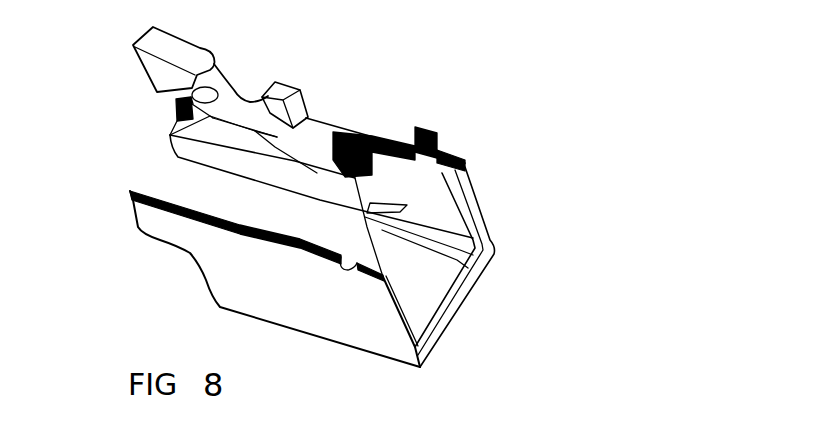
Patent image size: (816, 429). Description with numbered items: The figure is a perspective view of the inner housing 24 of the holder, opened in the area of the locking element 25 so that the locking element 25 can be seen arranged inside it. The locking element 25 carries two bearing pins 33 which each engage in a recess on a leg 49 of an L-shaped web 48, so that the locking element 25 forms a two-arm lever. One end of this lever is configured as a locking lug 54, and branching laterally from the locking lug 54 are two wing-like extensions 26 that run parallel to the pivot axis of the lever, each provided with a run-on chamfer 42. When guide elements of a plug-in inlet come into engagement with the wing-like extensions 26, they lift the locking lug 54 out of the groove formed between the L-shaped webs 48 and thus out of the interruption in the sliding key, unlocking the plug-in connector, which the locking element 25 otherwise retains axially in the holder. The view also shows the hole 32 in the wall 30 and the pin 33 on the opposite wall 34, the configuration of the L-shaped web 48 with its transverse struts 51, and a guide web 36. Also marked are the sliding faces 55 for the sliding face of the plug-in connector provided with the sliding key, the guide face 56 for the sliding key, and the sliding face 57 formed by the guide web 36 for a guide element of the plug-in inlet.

The inner housing 24 is at (201, 275).
The locking element 25 is at (244, 100).
The wing-like extensions 26 is at (300, 80).
The wall 30 is at (382, 337).
The hole 32 is at (349, 278).
The bearing pins 33 is at (180, 108).
The opposite wall 34 is at (443, 155).
The guide web 36 is at (458, 246).
The run-on chamfer 42 is at (300, 100).
The L-shaped web 48 is at (400, 176).
The leg 49 is at (187, 118).
The transverse struts 51 is at (388, 140).
The locking lug 54 is at (333, 122).
The sliding faces 55 is at (293, 187).
The guide face 56 is at (223, 143).
The sliding face 57 is at (379, 224).